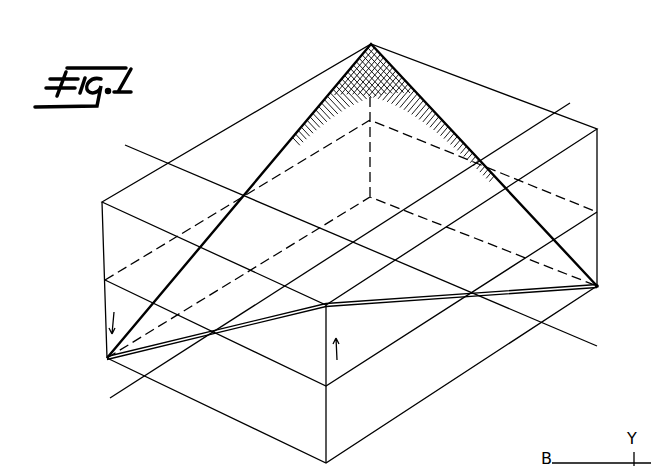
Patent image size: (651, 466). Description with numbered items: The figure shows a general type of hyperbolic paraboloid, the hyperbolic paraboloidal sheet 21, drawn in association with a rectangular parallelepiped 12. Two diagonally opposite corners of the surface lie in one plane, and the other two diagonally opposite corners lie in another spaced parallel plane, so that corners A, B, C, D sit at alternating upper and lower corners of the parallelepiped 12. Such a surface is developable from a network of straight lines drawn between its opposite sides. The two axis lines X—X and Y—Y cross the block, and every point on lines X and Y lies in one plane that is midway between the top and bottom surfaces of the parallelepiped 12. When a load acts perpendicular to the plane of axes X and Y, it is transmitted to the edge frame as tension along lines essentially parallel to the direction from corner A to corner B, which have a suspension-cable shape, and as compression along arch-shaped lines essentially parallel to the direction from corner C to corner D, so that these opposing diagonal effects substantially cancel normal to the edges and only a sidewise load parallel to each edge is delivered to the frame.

The parallelepiped 12 is at (436, 377).
The hyperbolic paraboloidal sheet 21 is at (368, 288).
The corner A is at (333, 337).
The corner B is at (369, 44).
The corner C is at (599, 287).
The corner D is at (103, 340).
The line X— X is at (363, 251).
The line Y— Y is at (338, 252).